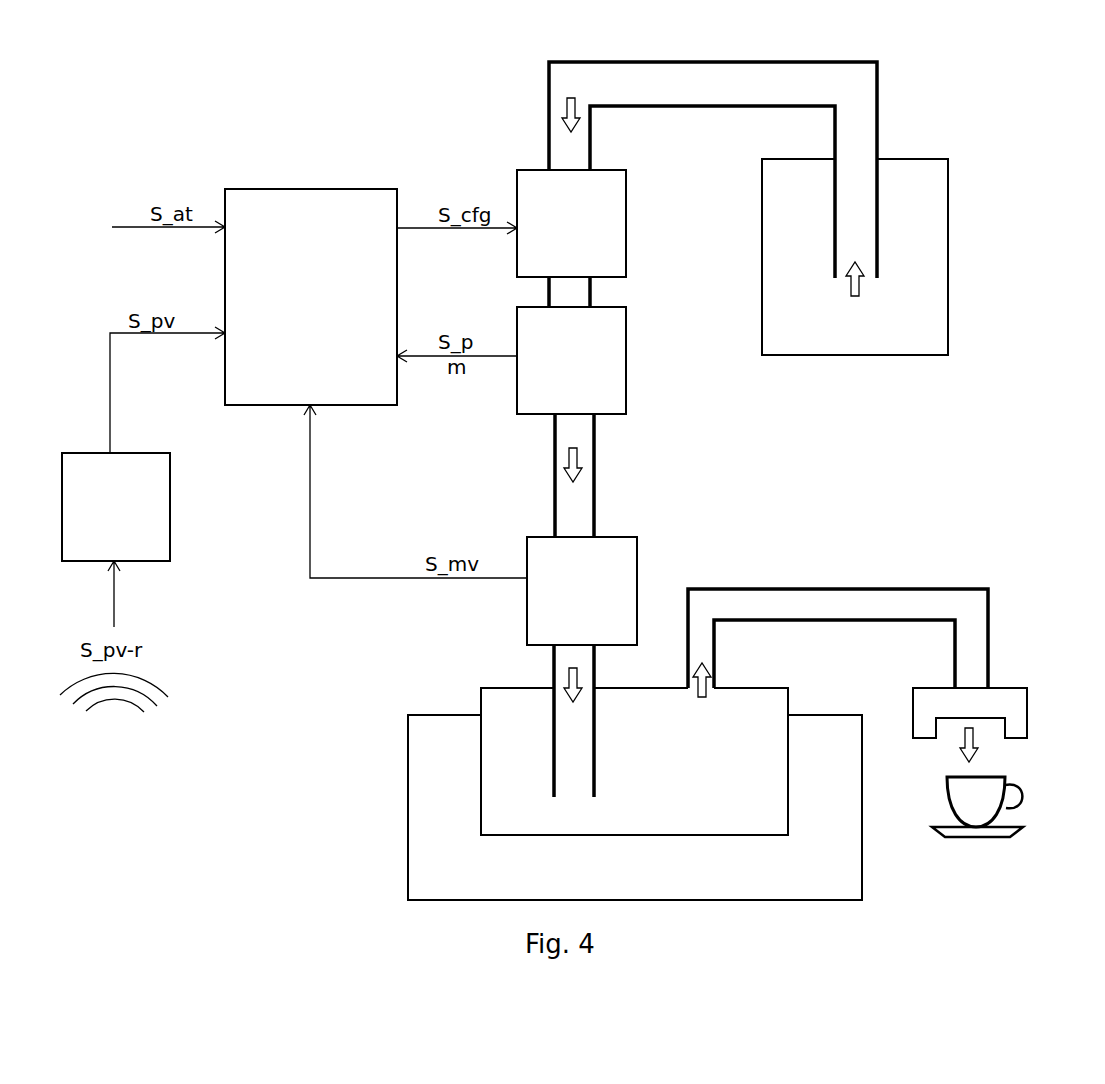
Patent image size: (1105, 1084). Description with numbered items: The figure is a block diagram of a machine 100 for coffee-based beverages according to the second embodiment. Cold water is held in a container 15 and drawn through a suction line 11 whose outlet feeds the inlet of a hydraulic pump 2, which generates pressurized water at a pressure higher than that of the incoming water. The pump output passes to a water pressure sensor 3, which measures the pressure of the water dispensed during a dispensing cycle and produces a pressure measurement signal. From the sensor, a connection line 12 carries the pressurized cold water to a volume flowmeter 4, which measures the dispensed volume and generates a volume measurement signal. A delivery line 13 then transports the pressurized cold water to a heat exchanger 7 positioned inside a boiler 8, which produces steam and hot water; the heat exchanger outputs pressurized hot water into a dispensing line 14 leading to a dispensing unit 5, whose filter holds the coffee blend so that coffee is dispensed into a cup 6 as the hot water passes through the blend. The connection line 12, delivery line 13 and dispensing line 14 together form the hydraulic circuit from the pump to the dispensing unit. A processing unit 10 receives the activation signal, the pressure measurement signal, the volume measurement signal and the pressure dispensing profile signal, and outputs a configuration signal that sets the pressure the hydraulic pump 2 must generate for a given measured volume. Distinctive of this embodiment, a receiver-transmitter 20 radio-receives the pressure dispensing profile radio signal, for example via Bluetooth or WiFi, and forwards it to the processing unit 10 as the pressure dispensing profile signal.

The machine for coffee-based beverages 100 is at (1050, 135).
The hydraulic pump 2 is at (626, 234).
The water pressure sensor 3 is at (626, 360).
The volume flowmeter 4 is at (637, 554).
The dispensing unit 5 is at (1005, 688).
The cup 6 is at (990, 776).
The heat exchanger 7 is at (481, 700).
The boiler 8 is at (408, 778).
The processing unit 10 is at (320, 189).
The suction line 11 is at (549, 130).
The connection line 12 is at (594, 468).
The delivery line 13 is at (554, 677).
The dispensing line 14 is at (860, 588).
The container for cold water 15 is at (948, 275).
The receiver-transmitter 20 is at (170, 524).